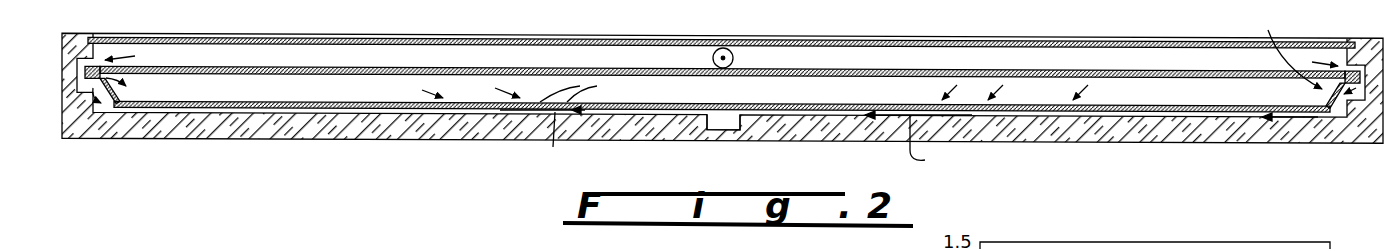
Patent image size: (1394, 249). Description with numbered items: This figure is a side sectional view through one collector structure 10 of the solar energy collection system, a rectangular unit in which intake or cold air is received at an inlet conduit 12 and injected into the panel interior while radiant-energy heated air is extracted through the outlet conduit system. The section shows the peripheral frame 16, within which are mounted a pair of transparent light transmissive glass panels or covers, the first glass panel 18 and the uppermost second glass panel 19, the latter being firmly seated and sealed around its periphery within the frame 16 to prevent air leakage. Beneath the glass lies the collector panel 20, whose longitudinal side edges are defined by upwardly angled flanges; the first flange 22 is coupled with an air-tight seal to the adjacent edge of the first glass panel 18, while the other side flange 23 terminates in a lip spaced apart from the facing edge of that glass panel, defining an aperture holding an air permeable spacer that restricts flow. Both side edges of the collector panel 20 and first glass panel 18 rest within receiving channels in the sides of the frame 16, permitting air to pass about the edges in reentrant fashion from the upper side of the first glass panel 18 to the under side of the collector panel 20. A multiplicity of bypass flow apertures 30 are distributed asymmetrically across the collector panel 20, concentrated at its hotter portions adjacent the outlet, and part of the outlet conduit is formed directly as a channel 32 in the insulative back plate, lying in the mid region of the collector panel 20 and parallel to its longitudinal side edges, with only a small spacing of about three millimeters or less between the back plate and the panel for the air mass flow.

The collector structure 10 is at (722, 100).
The inlet conduit 12 is at (723, 57).
The peripheral frame 16 is at (262, 132).
The first glass panel 18 is at (1002, 72).
The second glass panel 19 is at (940, 42).
The collector panel 20 is at (307, 107).
The first flange 22 is at (124, 108).
The second side flange 23 is at (1332, 98).
The bypass flow apertures 30 is at (589, 91).
The channel 32 is at (722, 124).